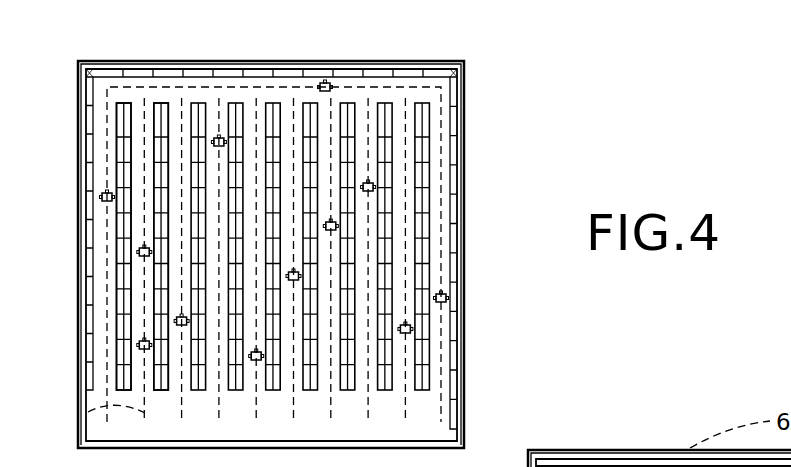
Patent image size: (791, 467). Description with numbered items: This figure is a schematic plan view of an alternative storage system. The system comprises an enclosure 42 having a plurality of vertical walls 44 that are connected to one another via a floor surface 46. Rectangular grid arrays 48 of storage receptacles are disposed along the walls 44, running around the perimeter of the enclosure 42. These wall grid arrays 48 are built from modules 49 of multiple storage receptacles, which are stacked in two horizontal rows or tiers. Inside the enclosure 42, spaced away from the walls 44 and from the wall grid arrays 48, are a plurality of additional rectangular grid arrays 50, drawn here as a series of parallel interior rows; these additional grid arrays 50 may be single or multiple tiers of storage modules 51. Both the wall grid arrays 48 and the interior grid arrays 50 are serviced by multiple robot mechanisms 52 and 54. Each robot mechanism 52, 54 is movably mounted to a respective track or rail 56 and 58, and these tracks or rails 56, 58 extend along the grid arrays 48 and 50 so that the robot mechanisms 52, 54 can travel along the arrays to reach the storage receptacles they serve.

The enclosure 42 is at (468, 132).
The vertical walls 44 is at (430, 63).
The floor surface 46 is at (445, 165).
The rectangular grid arrays 48 is at (127, 83).
The modules 49 is at (137, 72).
The additional rectangular grid arrays 50 is at (205, 98).
The storage modules 51 is at (118, 253).
The robot mechanism 52 is at (449, 298).
The robot mechanism 54 is at (155, 318).
The track or rail 56 is at (462, 216).
The track or rail 58 is at (88, 412).